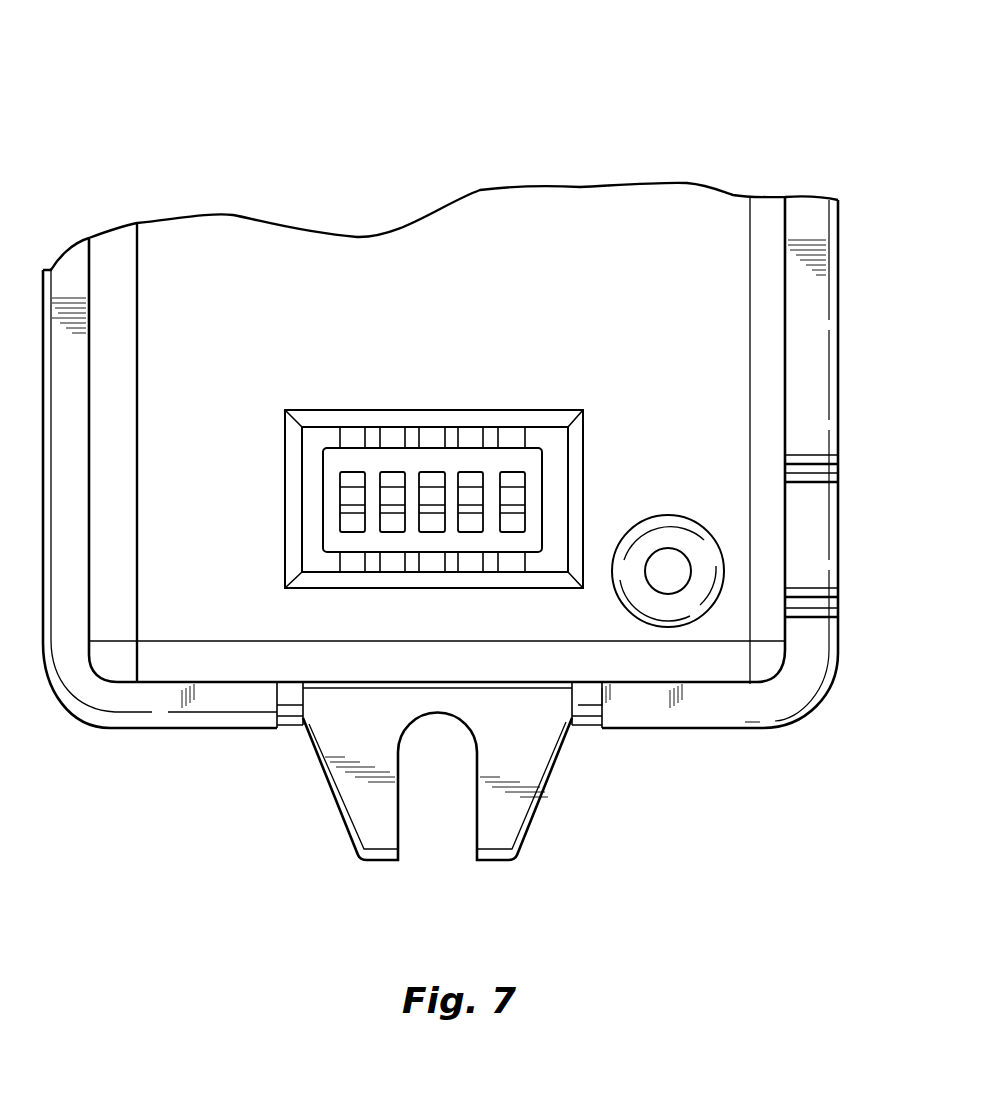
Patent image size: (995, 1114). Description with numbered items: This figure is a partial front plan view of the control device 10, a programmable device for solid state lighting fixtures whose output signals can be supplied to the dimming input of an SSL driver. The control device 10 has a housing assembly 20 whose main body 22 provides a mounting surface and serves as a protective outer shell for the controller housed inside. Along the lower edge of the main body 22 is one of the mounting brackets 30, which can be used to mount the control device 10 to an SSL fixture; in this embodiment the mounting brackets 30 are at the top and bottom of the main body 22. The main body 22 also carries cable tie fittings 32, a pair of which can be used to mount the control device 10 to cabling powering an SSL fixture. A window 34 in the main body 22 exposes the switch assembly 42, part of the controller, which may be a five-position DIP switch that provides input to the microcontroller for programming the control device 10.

The control device 10 is at (165, 162).
The housing assembly 20 is at (88, 718).
The main body 22 is at (765, 733).
The mounting brackets 30 is at (333, 790).
The cable tie fittings 32 is at (814, 538).
The window 34 is at (460, 413).
The switch assembly 42 is at (533, 478).